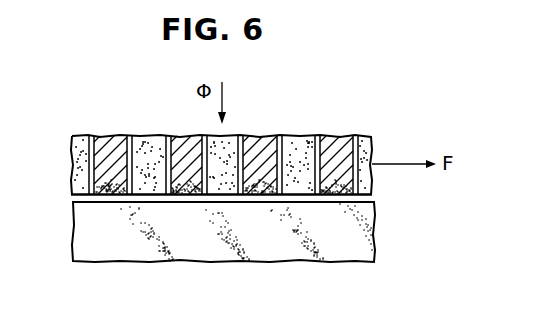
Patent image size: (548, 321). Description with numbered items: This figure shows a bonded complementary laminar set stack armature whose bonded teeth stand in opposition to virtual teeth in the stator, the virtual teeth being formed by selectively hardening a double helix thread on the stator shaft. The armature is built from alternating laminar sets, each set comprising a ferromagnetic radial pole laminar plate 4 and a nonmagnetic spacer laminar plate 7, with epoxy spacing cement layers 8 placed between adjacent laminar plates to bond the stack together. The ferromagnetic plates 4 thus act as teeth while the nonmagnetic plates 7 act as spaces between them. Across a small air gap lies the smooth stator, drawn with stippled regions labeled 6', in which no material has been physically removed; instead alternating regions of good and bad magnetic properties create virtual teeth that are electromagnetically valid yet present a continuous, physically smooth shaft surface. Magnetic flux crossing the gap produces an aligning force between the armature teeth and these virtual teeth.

The nonmagnetic spacer laminar plate 7 is at (210, 133).
The epoxy spacing cement layer 8 is at (242, 138).
The ferromagnetic radial pole laminar plate 4 is at (272, 138).
The substrate with diffused regions 6' is at (223, 257).